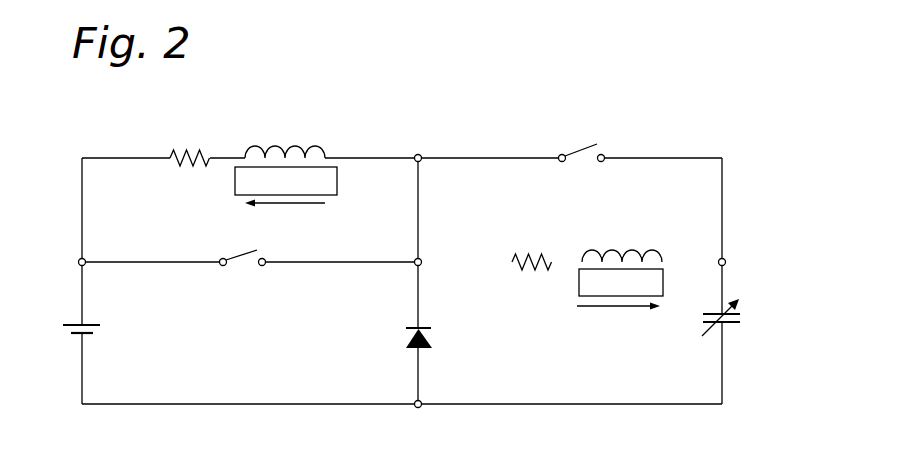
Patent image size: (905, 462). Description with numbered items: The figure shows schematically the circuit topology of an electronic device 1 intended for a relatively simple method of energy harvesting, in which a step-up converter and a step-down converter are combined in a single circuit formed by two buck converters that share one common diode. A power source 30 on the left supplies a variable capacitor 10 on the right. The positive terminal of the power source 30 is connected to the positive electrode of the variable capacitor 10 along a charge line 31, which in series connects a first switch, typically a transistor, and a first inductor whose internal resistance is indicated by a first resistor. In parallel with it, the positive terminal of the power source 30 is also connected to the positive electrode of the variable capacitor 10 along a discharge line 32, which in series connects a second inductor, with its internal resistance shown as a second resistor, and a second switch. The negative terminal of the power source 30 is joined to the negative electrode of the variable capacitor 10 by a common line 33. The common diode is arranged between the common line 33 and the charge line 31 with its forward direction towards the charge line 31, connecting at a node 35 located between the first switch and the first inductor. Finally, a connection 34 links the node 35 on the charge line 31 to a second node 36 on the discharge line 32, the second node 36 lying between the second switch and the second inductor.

The electronic device 1 is at (560, 102).
The variable capacitor 10 is at (736, 320).
The power source 30 is at (76, 331).
The charge line 31 is at (350, 263).
The discharge line 32 is at (675, 158).
The common line 33 is at (545, 404).
The connection 34 is at (418, 202).
The node 35 is at (420, 264).
The second node 36 is at (420, 157).